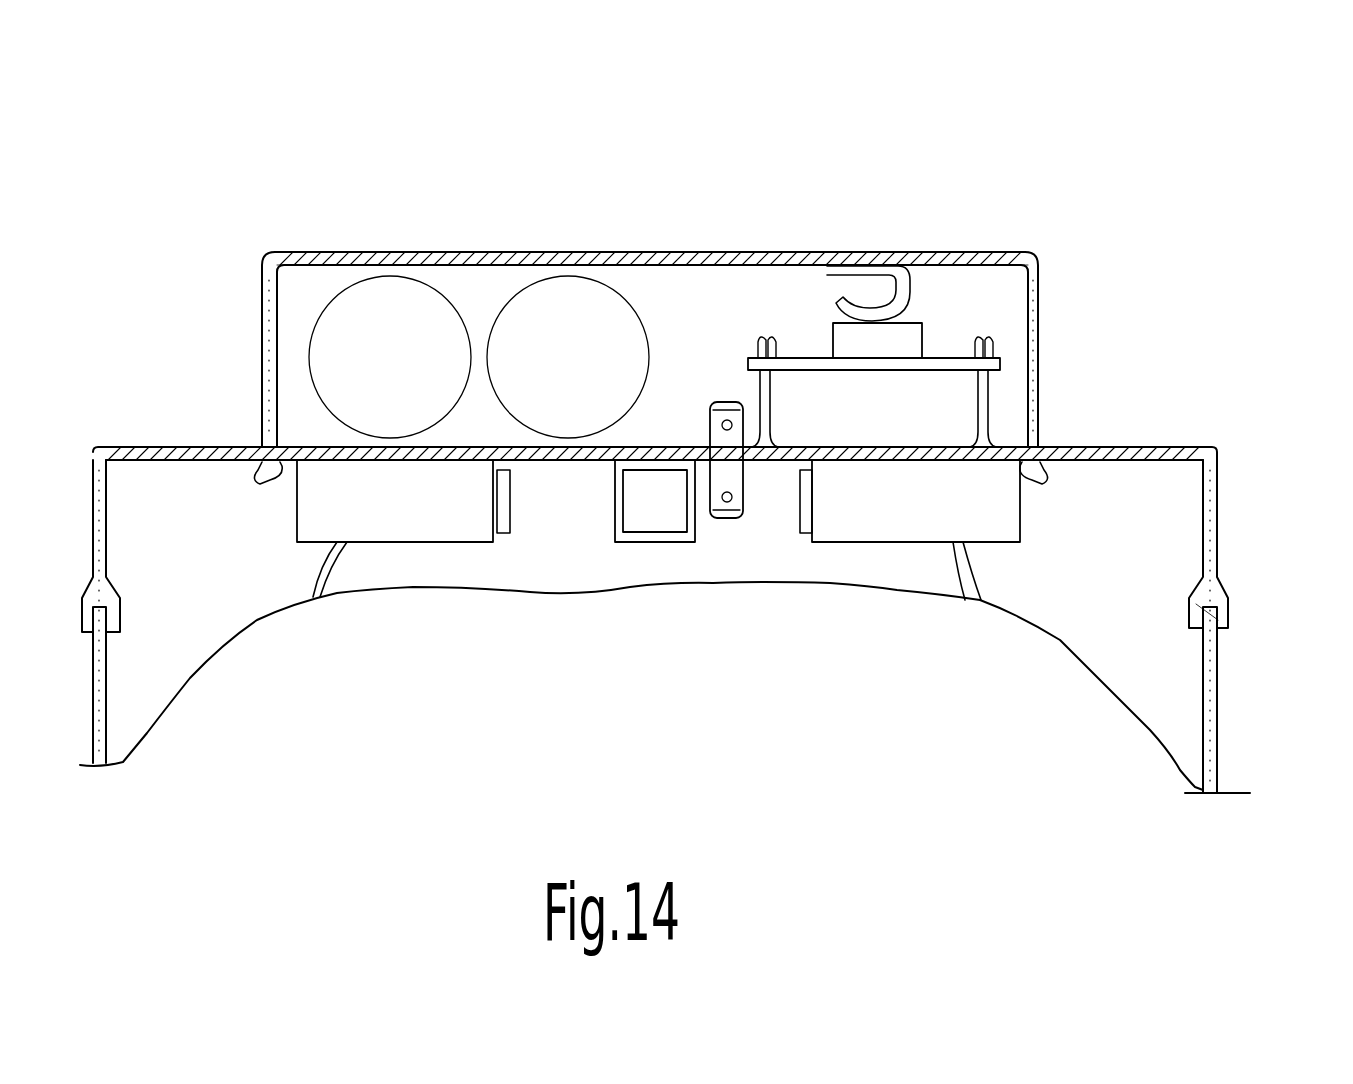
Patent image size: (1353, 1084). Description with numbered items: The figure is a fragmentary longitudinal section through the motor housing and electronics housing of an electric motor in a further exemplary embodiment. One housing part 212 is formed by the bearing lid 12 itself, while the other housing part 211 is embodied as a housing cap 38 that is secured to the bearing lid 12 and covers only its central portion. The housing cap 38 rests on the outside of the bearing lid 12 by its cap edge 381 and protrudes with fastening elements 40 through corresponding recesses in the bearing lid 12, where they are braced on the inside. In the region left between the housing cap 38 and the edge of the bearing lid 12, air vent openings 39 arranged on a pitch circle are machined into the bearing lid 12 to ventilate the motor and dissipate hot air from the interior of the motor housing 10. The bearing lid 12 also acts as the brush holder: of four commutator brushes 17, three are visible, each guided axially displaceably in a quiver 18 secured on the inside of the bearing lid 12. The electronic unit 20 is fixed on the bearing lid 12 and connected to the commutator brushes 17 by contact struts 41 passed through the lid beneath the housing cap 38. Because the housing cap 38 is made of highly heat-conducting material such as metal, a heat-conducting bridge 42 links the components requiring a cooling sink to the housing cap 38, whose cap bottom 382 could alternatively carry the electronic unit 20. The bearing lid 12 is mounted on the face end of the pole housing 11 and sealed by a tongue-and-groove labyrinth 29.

The motor housing 10 is at (1226, 478).
The pole housing 11 is at (1200, 693).
The bearing lid 12 is at (1218, 548).
The commutator brushes 17 is at (503, 505).
The quivers 18 is at (376, 505).
The electronic unit 20 is at (940, 340).
The tongue-and-groove labyrinth 29 is at (1232, 603).
The housing cap 38 is at (770, 240).
The air vent openings 39 is at (190, 447).
The fastening elements 40 is at (272, 482).
The contact struts 41 is at (727, 520).
The heat-conducting bridge 42 is at (910, 292).
The housing part 211 is at (634, 240).
The housing part 212 is at (558, 472).
The cap edge 381 is at (1040, 445).
The cap bottom 382 is at (460, 252).